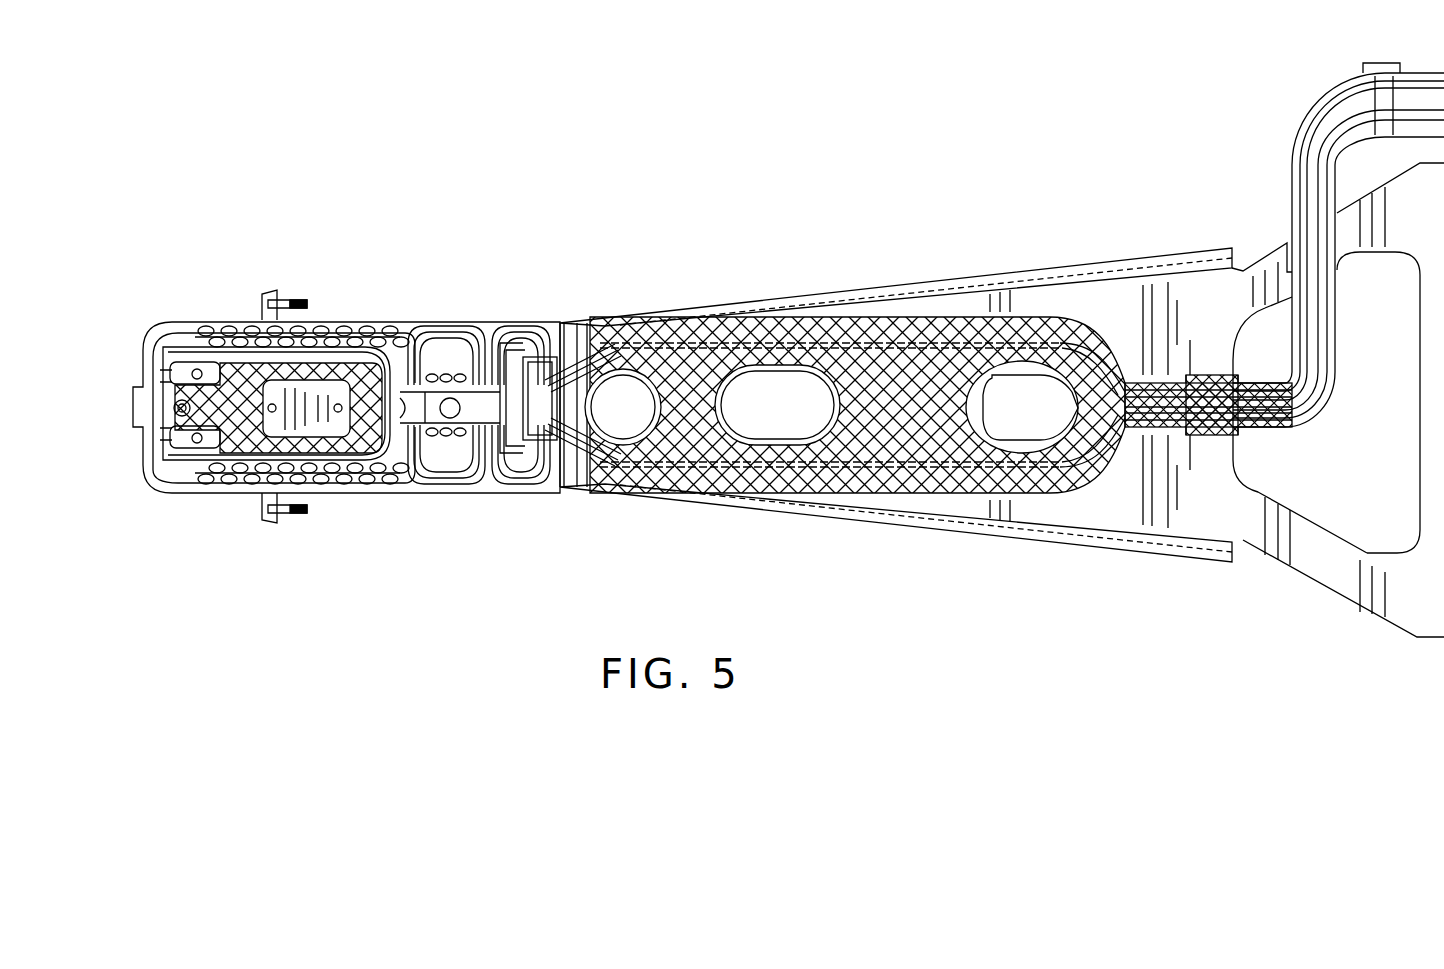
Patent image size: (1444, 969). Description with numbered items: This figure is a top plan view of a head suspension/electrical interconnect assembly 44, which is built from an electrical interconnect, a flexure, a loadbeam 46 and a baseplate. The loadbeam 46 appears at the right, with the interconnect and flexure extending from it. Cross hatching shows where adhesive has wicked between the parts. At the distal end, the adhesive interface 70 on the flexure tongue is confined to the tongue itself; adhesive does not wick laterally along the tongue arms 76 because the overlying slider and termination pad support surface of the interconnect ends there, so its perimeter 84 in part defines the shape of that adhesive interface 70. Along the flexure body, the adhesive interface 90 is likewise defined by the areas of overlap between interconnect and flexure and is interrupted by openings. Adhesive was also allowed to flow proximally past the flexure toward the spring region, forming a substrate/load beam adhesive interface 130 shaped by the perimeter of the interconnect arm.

The head suspension/electrical interconnect assembly 44 is at (716, 125).
The loadbeam 46 is at (1315, 598).
The adhesive interface 70 is at (320, 360).
The tongue arms 76 is at (236, 360).
The perimeter of the slider and termination pad support surface 84 is at (421, 318).
The adhesive interface 90 is at (890, 380).
The adhesive interface 130 is at (1200, 380).